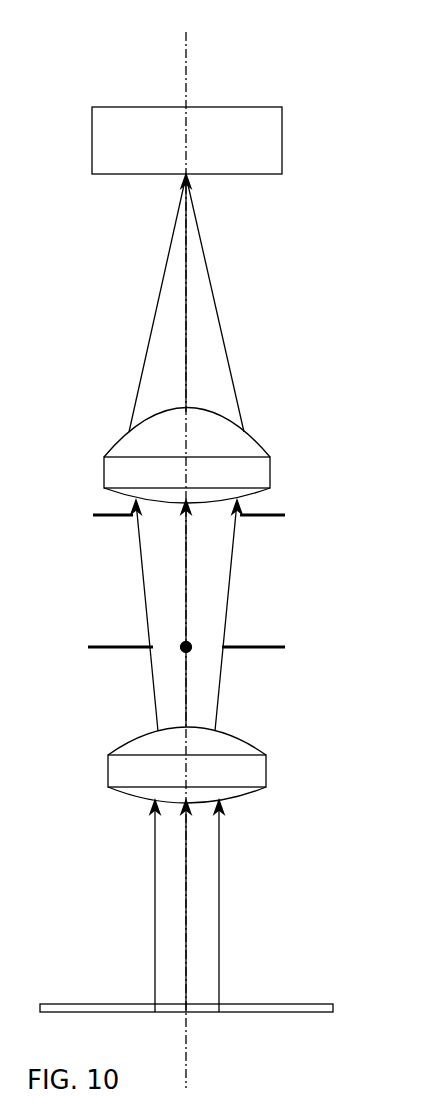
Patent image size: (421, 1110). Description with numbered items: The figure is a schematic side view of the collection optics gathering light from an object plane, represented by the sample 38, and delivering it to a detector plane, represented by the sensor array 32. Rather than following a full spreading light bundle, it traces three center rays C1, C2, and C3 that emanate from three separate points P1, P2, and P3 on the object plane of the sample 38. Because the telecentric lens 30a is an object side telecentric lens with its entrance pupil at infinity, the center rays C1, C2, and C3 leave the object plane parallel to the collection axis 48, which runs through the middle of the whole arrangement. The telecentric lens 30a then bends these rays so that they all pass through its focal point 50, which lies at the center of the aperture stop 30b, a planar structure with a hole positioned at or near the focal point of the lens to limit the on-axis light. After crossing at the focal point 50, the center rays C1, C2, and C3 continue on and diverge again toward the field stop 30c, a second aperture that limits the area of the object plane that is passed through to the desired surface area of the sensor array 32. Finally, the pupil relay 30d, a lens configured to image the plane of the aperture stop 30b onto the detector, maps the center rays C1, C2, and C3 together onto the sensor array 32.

The collection axis 48 is at (186, 73).
The sensor array 32 is at (122, 107).
The pupil relay 30d is at (112, 453).
The field stop 30c is at (115, 518).
The aperture stop 30b is at (268, 640).
The focal point 50 is at (181, 652).
The telecentric lens 30a is at (266, 778).
The center ray C1 is at (186, 915).
The center ray C2 is at (153, 850).
The center ray C3 is at (220, 866).
The sample 38 is at (267, 1003).
The point on object plane P1 is at (184, 1013).
The point on object plane P2 is at (153, 1013).
The point on object plane P3 is at (220, 1013).